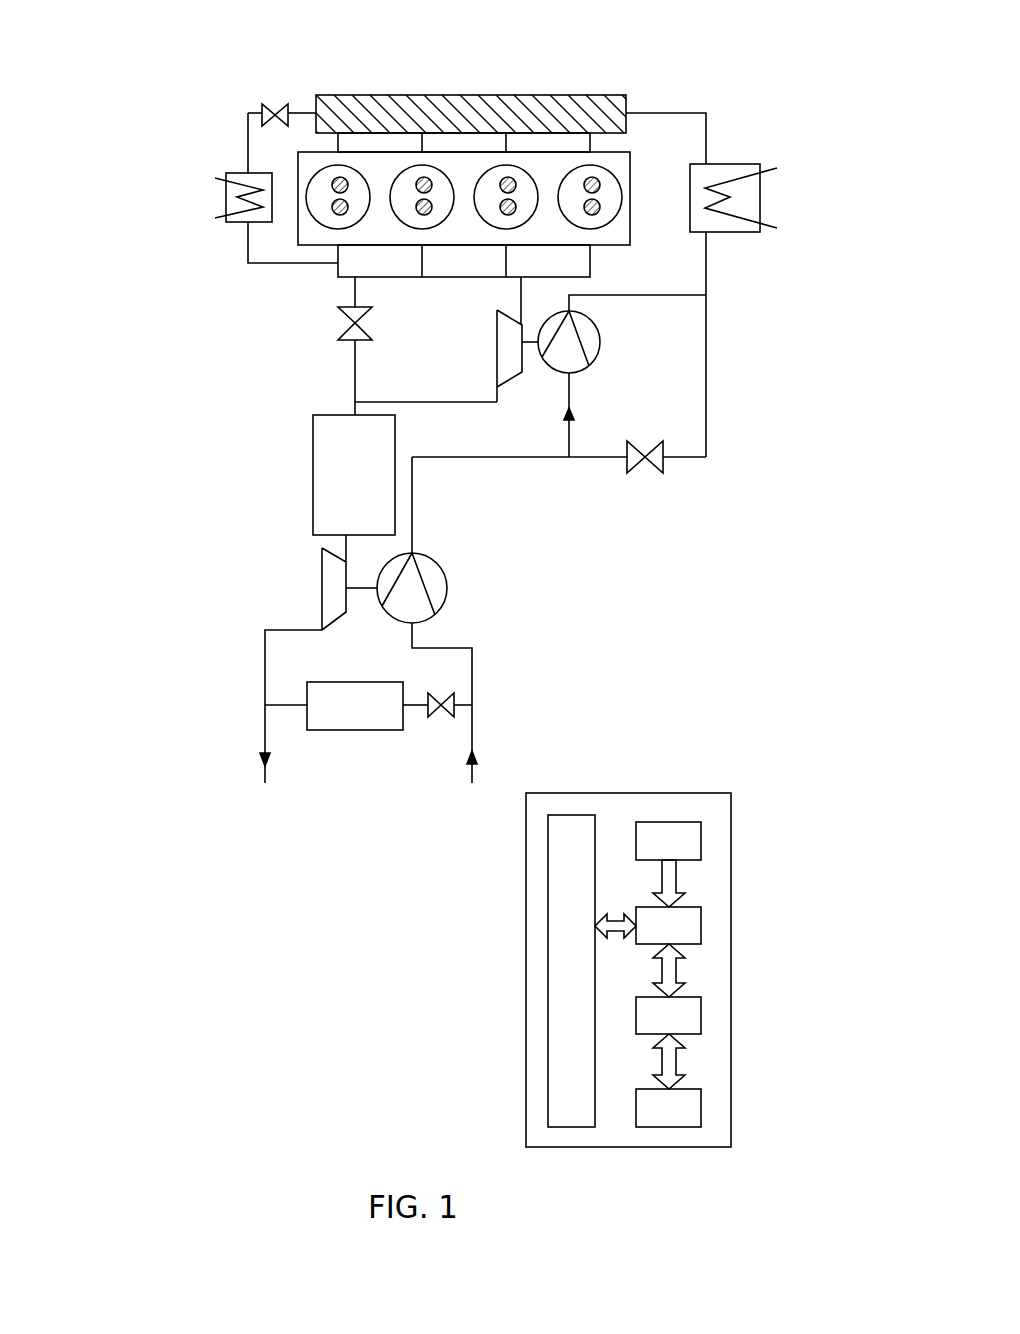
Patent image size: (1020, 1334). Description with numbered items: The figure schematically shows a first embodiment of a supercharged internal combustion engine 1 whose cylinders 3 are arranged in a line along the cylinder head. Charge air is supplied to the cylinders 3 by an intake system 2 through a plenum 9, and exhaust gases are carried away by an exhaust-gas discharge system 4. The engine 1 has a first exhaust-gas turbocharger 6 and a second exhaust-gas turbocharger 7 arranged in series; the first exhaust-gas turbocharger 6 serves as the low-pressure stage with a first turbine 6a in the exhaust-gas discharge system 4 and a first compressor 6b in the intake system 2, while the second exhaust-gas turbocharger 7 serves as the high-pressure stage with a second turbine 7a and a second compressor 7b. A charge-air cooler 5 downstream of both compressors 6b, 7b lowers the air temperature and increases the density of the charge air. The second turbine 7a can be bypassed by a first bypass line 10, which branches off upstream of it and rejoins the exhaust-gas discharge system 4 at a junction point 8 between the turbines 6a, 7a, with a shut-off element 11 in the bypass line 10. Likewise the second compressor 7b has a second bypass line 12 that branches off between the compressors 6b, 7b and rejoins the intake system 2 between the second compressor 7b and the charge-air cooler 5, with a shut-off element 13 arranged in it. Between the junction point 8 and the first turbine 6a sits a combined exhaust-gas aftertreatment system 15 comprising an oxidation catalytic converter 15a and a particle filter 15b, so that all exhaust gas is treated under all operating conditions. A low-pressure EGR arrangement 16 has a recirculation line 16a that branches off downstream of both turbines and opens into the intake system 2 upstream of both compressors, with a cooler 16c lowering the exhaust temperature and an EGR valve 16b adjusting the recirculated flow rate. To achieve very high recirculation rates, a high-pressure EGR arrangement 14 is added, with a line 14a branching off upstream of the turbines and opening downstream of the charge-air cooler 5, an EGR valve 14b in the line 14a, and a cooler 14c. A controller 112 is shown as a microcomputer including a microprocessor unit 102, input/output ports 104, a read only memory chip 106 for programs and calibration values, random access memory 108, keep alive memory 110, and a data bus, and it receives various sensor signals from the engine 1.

The internal combustion engine 1 is at (153, 153).
The intake system 2 is at (800, 533).
The cylinders 3 is at (368, 206).
The exhaust-gas discharge system 4 is at (205, 522).
The charge-air cooler 5 is at (760, 200).
The first exhaust-gas turbocharger 6 is at (358, 648).
The first turbine 6a is at (322, 585).
The first compressor 6b is at (447, 585).
The second exhaust-gas turbocharger 7 is at (522, 403).
The second turbine 7a is at (497, 345).
The second compressor 7b is at (600, 342).
The junction point 8 is at (355, 400).
The plenum 9 is at (447, 110).
The first bypass line 10 is at (355, 350).
The shut-off element 11 is at (338, 312).
The second bypass line 12 is at (706, 397).
The shut-off element 13 is at (663, 462).
The high-pressure EGR arrangement 14 is at (147, 242).
The line 14a is at (248, 258).
The EGR valve 14b is at (276, 104).
The cooler 14c is at (226, 190).
The exhaust-gas aftertreatment system 15 is at (313, 473).
The oxidation catalytic converter 15a is at (354, 475).
The particle filter 15b is at (354, 475).
The low-pressure EGR arrangement 16 is at (367, 808).
The recirculation line 16a is at (285, 710).
The EGR valve 16b is at (441, 694).
The cooler 16c is at (367, 718).
The microprocessor unit 102 is at (701, 925).
The input/output ports 104 is at (595, 823).
The read only memory chip 106 is at (701, 840).
The random access memory 108 is at (701, 1015).
The keep alive memory 110 is at (701, 1105).
The controller 112 is at (722, 793).